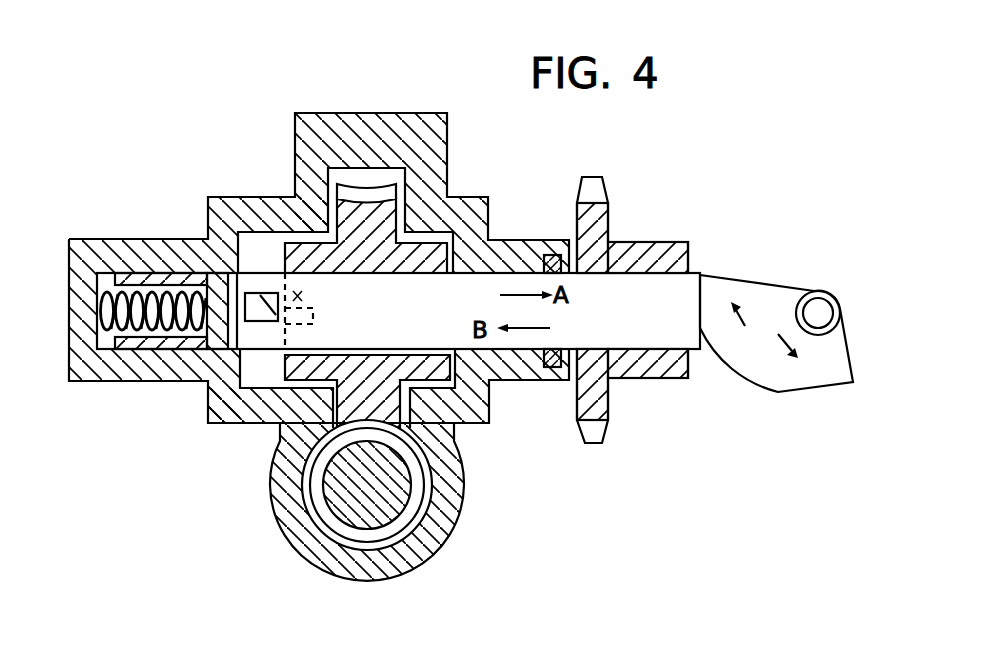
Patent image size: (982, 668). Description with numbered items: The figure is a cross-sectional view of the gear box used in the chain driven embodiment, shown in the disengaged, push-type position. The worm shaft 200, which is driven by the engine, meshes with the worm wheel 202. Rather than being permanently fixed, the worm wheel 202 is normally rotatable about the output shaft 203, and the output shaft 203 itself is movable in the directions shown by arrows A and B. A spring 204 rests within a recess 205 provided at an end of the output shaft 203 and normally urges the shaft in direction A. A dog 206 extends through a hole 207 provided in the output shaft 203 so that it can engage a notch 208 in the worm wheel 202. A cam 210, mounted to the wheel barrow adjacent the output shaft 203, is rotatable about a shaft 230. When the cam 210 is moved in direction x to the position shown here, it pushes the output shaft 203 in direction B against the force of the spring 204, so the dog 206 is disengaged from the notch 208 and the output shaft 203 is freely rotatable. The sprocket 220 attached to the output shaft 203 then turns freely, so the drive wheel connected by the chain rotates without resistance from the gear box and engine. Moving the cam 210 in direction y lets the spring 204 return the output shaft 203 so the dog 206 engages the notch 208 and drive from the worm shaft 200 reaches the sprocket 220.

The worm shaft 200 is at (348, 508).
The worm wheel 202 is at (440, 250).
The output shaft 203 is at (692, 275).
The spring 204 is at (114, 288).
The recess 205 is at (170, 333).
The dog 206 is at (262, 319).
The hole 207 is at (279, 304).
The notch 208 is at (316, 310).
The cam 210 is at (770, 382).
The sprocket 220 is at (602, 218).
The shaft 230 is at (822, 304).